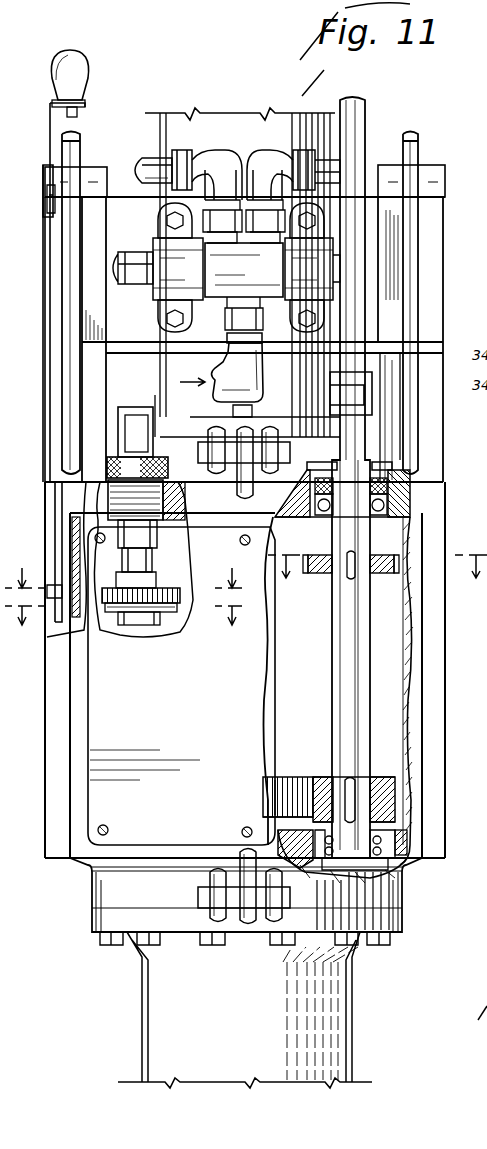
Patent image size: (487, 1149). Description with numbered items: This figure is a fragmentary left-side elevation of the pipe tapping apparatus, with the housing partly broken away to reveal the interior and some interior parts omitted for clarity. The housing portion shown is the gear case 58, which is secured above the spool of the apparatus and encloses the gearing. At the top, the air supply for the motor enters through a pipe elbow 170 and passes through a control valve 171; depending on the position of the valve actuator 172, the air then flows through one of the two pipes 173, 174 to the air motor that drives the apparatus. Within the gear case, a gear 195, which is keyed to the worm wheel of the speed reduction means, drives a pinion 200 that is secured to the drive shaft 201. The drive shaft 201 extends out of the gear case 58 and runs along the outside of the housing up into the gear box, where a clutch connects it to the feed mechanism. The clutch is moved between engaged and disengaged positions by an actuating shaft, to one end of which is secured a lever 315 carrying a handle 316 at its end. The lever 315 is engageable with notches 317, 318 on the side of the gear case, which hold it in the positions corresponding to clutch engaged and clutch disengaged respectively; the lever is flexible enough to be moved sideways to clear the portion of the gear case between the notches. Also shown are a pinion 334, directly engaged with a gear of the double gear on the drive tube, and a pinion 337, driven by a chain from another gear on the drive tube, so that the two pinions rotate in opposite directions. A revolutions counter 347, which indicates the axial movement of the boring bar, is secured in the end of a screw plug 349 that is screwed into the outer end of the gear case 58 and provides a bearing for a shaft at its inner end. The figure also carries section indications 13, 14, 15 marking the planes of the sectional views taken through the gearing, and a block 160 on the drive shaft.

The handle 316 is at (90, 70).
The lever 315 is at (50, 128).
The notch 317 is at (42, 168).
The notch 318 is at (46, 212).
The pipe 173 is at (135, 160).
The pipe 174 is at (323, 168).
The drive shaft 201 is at (366, 112).
The valve actuator 172 is at (145, 260).
The control valve 171 is at (246, 267).
The pipe elbow 170 is at (221, 375).
The revolutions counter 347 is at (126, 407).
The screw plug 349 is at (107, 470).
The clamp block 160 is at (350, 448).
The pinion 334 is at (175, 588).
The pinion 337 is at (175, 625).
The gear 195 is at (266, 800).
The pinion 200 is at (325, 777).
The gear case 58 is at (58, 852).
The section line 13- 13 is at (375, 588).
The section line 14- 14 is at (128, 561).
The section line 15- 15 is at (127, 636).